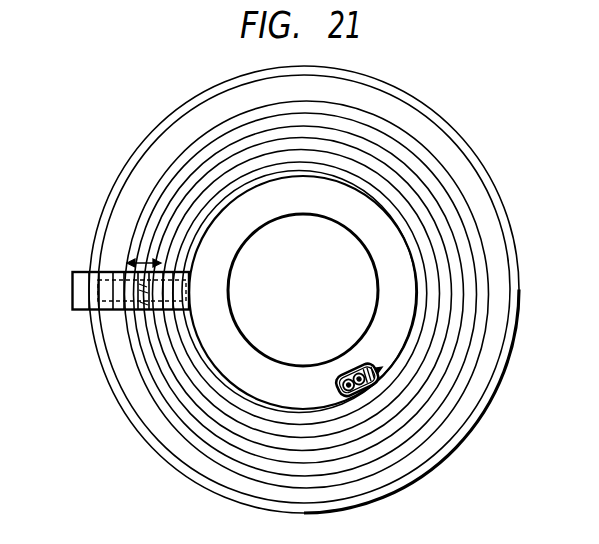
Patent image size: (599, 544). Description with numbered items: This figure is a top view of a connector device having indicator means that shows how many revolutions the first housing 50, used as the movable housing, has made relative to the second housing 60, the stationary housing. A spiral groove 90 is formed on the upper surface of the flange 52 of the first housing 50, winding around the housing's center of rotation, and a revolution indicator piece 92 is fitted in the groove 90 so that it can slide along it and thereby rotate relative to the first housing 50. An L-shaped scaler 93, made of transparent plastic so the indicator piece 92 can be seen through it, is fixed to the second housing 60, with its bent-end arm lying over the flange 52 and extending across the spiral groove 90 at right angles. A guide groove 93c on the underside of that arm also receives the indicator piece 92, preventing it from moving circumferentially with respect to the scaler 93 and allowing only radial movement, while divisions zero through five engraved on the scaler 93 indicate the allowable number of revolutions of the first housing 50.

The first housing 50 is at (487, 335).
The flange 52 is at (400, 335).
The second housing 60 is at (480, 427).
The spiral groove 90 is at (410, 445).
The revolution indicator piece 92 is at (145, 303).
The scaler 93 is at (80, 277).
The guide groove 93c is at (92, 297).